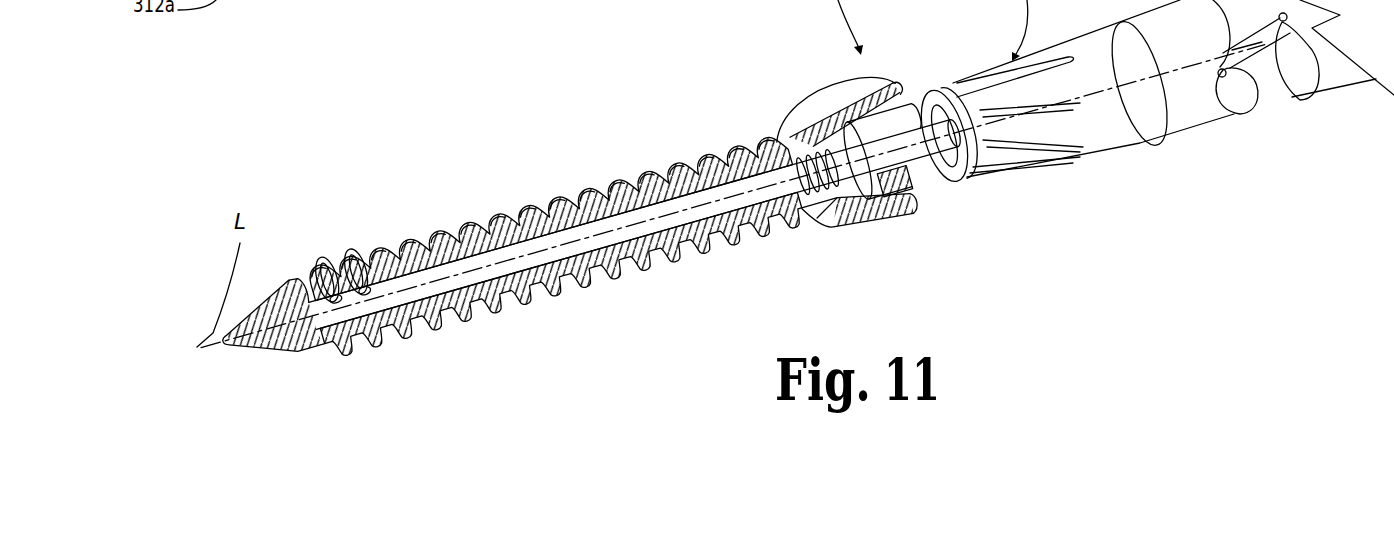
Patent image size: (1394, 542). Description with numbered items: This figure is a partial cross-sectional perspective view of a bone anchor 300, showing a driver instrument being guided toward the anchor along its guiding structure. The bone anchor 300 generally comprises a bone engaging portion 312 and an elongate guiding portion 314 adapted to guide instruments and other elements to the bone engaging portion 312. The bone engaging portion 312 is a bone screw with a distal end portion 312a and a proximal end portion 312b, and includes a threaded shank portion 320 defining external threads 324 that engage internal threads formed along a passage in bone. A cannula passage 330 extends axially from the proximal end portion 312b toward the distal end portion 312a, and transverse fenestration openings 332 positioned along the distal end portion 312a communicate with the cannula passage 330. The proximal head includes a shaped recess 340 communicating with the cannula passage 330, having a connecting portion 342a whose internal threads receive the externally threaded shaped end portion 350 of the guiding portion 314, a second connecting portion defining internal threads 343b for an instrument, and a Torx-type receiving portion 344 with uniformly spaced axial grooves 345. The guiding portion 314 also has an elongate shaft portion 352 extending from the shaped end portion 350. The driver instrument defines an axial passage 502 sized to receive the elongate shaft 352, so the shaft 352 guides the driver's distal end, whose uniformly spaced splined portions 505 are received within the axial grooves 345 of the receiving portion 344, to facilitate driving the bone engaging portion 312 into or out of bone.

The bone anchor 300 is at (694, 64).
The bone engaging portion 312 is at (539, 128).
The distal end portion 312a is at (334, 375).
The proximal end portion 312b is at (874, 262).
The elongate guiding portion 314 is at (914, 88).
The threaded shank portion 320 is at (612, 164).
The external threads 324 is at (500, 217).
The cannula passage 330 is at (563, 248).
The transverse fenestration openings 332 is at (362, 248).
The shaped recess 340 is at (940, 194).
The connecting portion 342a is at (775, 152).
The internal threads 343b is at (867, 108).
The receiving portion 344 is at (847, 228).
The axial grooves 345 is at (912, 210).
The shaped end portion 350 is at (797, 162).
The elongate shaft portion 352 is at (977, 165).
The axial passage 502 is at (918, 105).
The splined portions 505 is at (1087, 103).